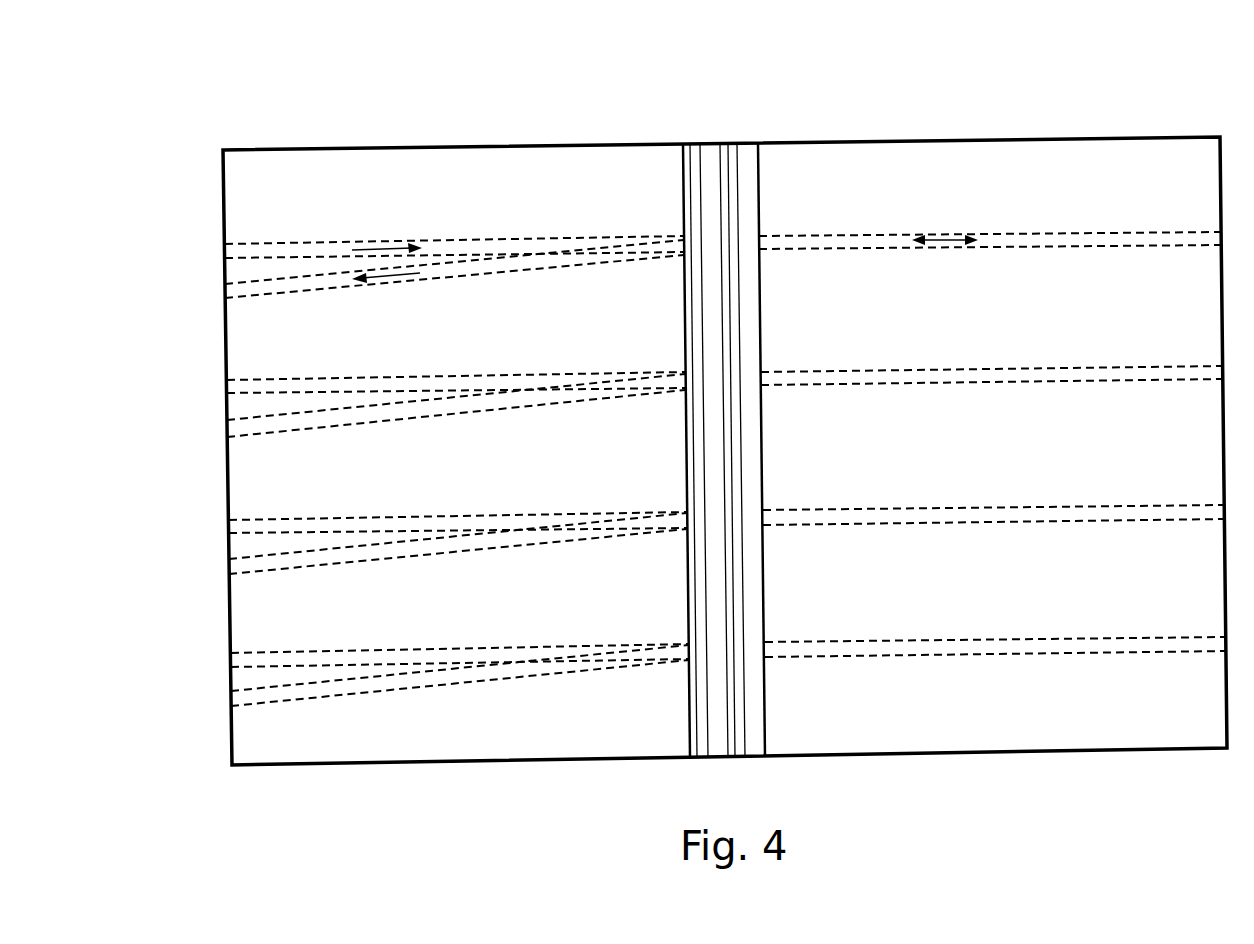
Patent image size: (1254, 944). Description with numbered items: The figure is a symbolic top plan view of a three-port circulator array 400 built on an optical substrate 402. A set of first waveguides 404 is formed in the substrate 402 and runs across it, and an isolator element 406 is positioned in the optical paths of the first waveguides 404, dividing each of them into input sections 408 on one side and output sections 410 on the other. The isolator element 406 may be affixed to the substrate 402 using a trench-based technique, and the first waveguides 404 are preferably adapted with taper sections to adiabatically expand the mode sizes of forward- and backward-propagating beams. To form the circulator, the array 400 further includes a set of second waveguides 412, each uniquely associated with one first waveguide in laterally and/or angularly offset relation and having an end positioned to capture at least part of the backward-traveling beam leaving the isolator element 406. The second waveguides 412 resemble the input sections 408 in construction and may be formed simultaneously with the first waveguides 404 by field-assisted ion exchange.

The three-port circulator array 400 is at (1028, 838).
The optical substrate 402 is at (457, 738).
The first waveguides 404 is at (320, 253).
The isolator element 406 is at (728, 742).
The input sections 408 is at (463, 247).
The output sections 410 is at (1007, 238).
The second waveguides 412 is at (277, 290).